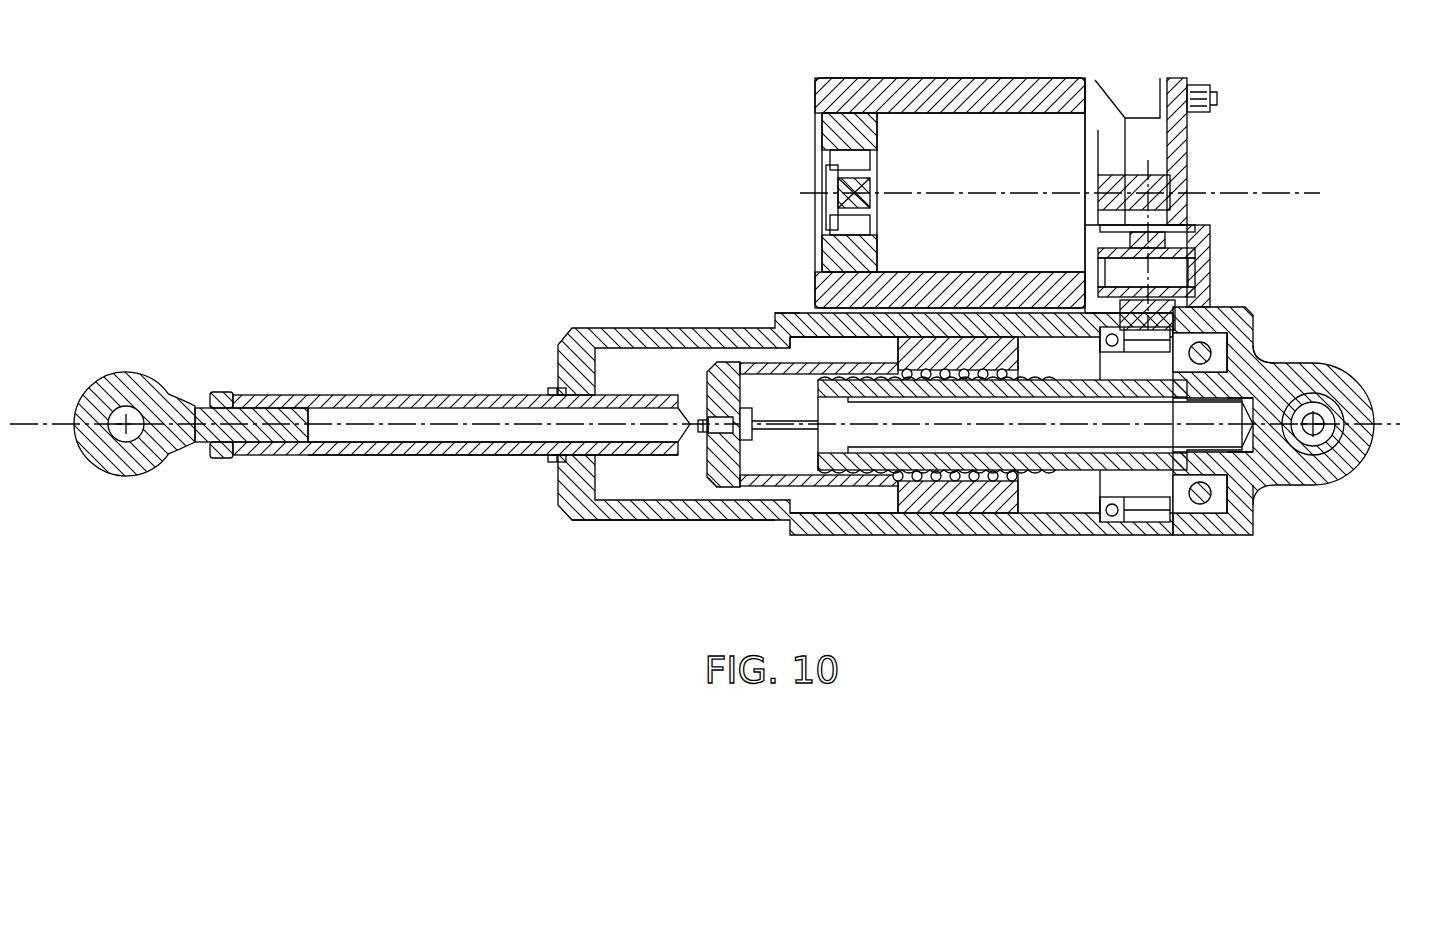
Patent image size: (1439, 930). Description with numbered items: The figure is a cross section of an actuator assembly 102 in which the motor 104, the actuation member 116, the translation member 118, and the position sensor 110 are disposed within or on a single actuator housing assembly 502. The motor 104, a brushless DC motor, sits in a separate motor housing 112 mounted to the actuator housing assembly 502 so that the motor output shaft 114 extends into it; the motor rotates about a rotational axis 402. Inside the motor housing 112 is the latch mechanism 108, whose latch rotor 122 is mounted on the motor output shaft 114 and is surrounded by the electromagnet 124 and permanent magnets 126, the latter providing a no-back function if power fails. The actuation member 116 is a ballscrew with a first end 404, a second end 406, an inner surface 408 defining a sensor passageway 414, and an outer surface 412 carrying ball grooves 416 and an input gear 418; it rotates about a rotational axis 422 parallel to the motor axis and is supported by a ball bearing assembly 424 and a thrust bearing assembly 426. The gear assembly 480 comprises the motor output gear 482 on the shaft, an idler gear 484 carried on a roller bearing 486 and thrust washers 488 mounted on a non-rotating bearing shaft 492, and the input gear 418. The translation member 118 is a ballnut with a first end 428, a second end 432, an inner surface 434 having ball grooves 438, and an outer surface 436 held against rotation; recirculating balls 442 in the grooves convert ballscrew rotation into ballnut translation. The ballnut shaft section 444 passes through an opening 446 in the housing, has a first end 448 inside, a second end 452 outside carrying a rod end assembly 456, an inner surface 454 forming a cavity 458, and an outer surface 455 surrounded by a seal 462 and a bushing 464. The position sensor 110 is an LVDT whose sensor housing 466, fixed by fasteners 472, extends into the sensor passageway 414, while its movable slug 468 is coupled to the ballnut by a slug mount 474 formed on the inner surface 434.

The actuator assembly 102 is at (572, 168).
The motor 104 is at (998, 113).
The latch mechanism 108 is at (860, 140).
The position sensor 110 is at (1320, 392).
The motor housing 112 is at (838, 78).
The motor output shaft 114 is at (870, 188).
The actuation member 116 is at (1062, 513).
The translation member 118 is at (874, 500).
The latch rotor 122 is at (835, 198).
The electromagnet 124 is at (826, 160).
The permanent magnets 126 is at (868, 222).
The rotational axis 402 is at (1298, 192).
The first end 404 is at (1242, 462).
The second end 406 is at (808, 432).
The inner surface 408 is at (818, 480).
The outer surface 412 is at (1030, 368).
The sensor passageway 414 is at (818, 400).
The ball grooves 416 is at (800, 313).
The input gear 418 is at (1138, 383).
The rotational axis 422 is at (1375, 432).
The ball bearing assembly 424 is at (1113, 522).
The thrust bearing assembly 426 is at (1225, 515).
The first end 428 is at (1005, 513).
The second end 432 is at (228, 458).
The inner surface 434 is at (758, 440).
The outer surface 436 is at (950, 513).
The ball grooves 438 is at (935, 363).
The recirculating balls 442 is at (960, 366).
The shaft section 444 is at (405, 395).
The opening 446 is at (552, 462).
The first end 448 is at (707, 378).
The second end 452 is at (232, 395).
The inner surface 454 is at (340, 410).
The outer surface 455 is at (340, 456).
The rod end assembly 456 is at (130, 374).
The cavity 458 is at (428, 442).
The seal 462 is at (555, 389).
The bushing 464 is at (610, 520).
The sensor housing 466 is at (890, 370).
The movable slug 468 is at (745, 487).
The fasteners 472 is at (1256, 366).
The slug mount 474 is at (702, 465).
The gear assembly 480 is at (1245, 148).
The motor output gear 482 is at (1170, 225).
The idler gear 484 is at (1180, 252).
The roller bearing 486 is at (1135, 235).
The thrust washers 488 is at (1105, 292).
The bearing shaft 492 is at (1100, 268).
The actuator housing assembly 502 is at (775, 318).